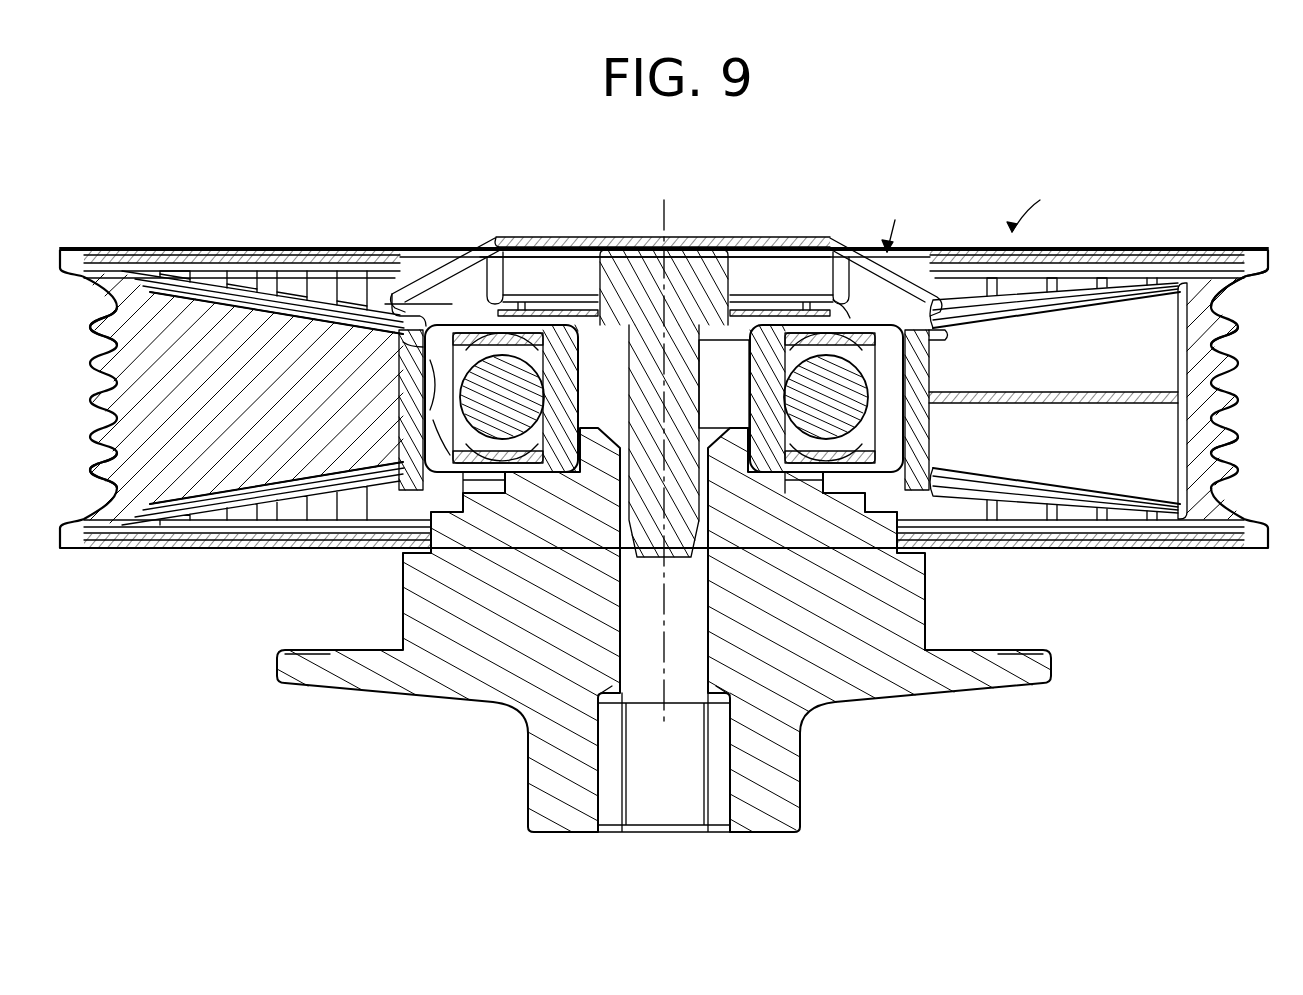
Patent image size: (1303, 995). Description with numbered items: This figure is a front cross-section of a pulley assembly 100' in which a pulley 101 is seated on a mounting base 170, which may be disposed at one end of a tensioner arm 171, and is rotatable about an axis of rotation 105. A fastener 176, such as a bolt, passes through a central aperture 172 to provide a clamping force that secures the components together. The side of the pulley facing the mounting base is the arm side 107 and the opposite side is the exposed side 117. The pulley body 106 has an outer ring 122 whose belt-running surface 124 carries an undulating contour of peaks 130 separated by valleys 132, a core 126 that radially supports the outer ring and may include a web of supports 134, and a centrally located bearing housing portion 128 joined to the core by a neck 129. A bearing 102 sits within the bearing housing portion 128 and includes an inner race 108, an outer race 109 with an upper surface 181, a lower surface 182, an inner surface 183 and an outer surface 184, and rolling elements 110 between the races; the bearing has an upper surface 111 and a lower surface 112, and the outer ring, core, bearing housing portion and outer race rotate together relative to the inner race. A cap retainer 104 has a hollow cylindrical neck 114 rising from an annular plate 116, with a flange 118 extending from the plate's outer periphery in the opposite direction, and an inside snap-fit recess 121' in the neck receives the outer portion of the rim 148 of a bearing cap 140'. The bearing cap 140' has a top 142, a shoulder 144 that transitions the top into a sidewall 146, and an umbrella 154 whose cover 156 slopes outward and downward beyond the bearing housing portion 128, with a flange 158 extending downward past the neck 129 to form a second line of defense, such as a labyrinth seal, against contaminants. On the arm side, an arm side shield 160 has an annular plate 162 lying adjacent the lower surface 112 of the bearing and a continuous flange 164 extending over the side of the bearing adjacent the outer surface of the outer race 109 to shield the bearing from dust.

The pulley assembly 100' is at (1046, 206).
The pulley 101 is at (963, 246).
The bearing 102 is at (930, 384).
The cap retainer 104 is at (757, 295).
The axis of rotation 105 is at (664, 632).
The pulley body 106 is at (1118, 246).
The arm side 107 is at (128, 515).
The inner race 108 is at (757, 383).
The outer race 109 is at (930, 440).
The rolling elements 110 is at (802, 406).
The upper surface 111 is at (788, 300).
The lower surface 112 is at (790, 472).
The neck 114 is at (851, 300).
The plate 116 is at (903, 266).
The exposed side 117 is at (122, 300).
The flange 118 is at (930, 340).
The inside snap-fit recess 121' is at (390, 337).
The outer ring 122 is at (1205, 264).
The belt-running surface 124 is at (1240, 356).
The core 126 is at (1100, 512).
The bearing housing portion 128 is at (378, 522).
The neck 129 is at (385, 338).
The peaks 130 is at (1236, 486).
The valleys 132 is at (1238, 457).
The web of supports 134 is at (1038, 512).
The bearing cap 140' is at (662, 213).
The top 142 is at (545, 238).
The shoulder 144 is at (491, 283).
The sidewall 146 is at (487, 267).
The rim 148 is at (508, 281).
The umbrella 154 is at (886, 253).
The cover 156 is at (373, 278).
The flange 158 is at (310, 273).
The arm side shield 160 is at (843, 477).
The annular plate 162 is at (483, 478).
The continuous flange 164 is at (403, 462).
The mounting base 170 is at (594, 523).
The tensioner arm 171 is at (355, 677).
The aperture 172 is at (708, 572).
The fastener 176 is at (612, 309).
The upper surface 181 is at (430, 380).
The lower surface 182 is at (448, 522).
The inner surface 183 is at (428, 403).
The outer surface 184 is at (427, 430).